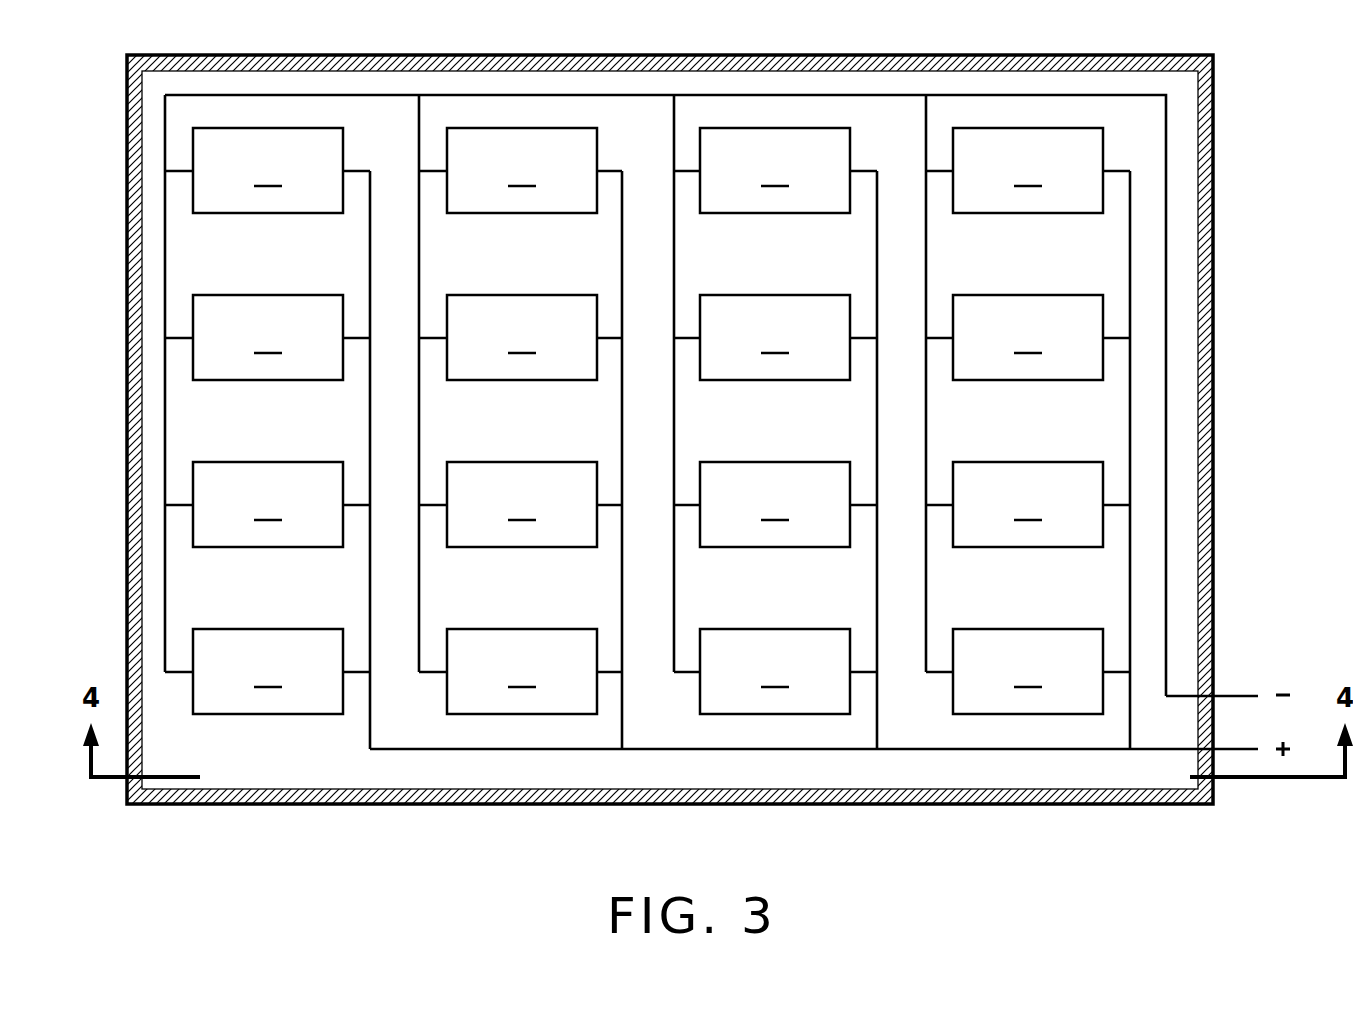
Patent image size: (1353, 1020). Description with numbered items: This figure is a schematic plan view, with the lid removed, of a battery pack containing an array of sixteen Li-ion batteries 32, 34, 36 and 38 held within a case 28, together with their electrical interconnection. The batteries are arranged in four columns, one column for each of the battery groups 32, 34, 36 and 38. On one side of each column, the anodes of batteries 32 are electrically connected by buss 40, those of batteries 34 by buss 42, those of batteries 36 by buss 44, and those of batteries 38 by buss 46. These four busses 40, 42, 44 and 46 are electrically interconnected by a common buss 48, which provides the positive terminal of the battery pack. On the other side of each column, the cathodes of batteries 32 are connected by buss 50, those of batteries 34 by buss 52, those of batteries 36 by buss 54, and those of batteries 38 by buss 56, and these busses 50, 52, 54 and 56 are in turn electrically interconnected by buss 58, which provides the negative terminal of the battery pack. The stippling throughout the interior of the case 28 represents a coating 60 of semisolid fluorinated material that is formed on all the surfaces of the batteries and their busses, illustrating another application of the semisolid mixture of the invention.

The case 28 is at (1231, 65).
The Li-ion batteries 32 is at (1028, 421).
The Li-ion batteries 34 is at (775, 421).
The Li-ion batteries 36 is at (520, 421).
The Li-ion batteries 38 is at (267, 421).
The buss 40 is at (1130, 713).
The buss 42 is at (880, 713).
The buss 44 is at (624, 713).
The buss 46 is at (372, 713).
The buss 48 is at (967, 752).
The buss 50 is at (924, 150).
The buss 52 is at (670, 150).
The buss 54 is at (419, 150).
The buss 56 is at (165, 150).
The buss 58 is at (1133, 93).
The coating of semisolid fluorinated material 60 is at (1182, 292).